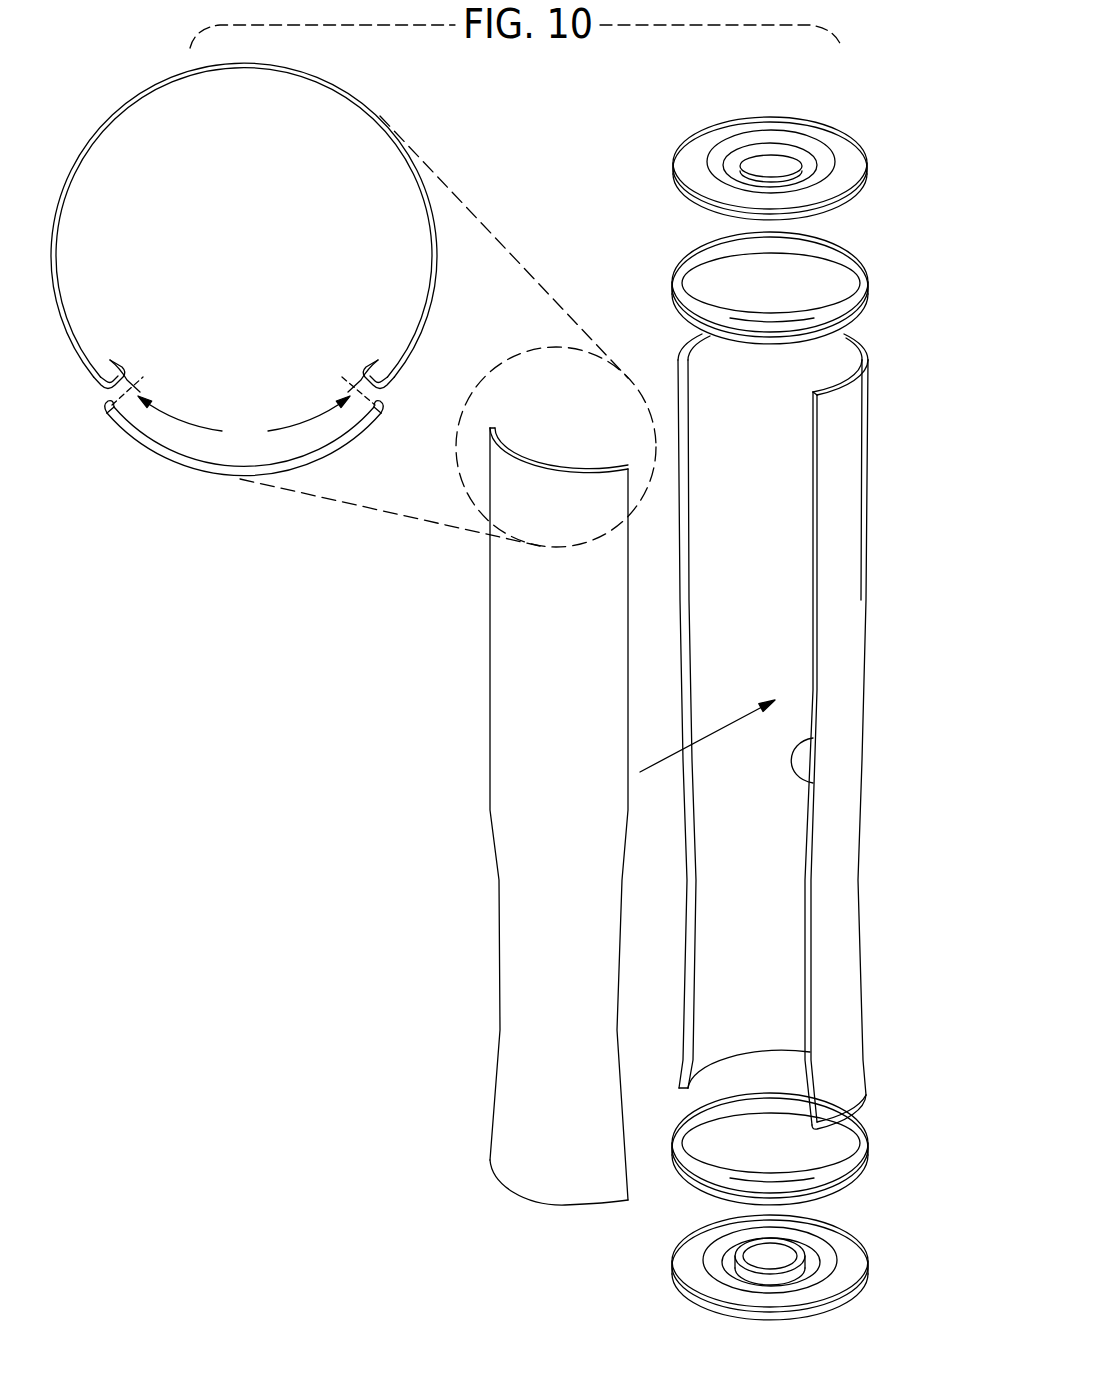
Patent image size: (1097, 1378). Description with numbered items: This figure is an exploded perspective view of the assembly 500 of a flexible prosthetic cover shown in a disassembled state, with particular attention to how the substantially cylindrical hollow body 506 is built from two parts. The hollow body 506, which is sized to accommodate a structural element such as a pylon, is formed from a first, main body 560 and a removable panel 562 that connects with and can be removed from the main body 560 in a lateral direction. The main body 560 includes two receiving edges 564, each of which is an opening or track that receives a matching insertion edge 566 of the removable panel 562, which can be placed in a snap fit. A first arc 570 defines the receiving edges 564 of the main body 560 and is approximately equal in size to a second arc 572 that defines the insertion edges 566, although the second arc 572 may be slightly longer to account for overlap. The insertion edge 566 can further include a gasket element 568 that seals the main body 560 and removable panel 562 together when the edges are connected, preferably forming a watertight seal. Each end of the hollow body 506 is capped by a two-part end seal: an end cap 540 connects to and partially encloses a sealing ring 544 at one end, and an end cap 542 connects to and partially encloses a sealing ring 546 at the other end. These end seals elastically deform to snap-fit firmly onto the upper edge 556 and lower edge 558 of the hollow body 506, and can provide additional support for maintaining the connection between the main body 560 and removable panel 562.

The assembly 500 is at (822, 112).
The hollow body 506 is at (166, 77).
The end cap 540 is at (725, 132).
The end cap 542 is at (853, 1290).
The sealing ring 544 is at (692, 257).
The sealing ring 546 is at (700, 1188).
The upper edge 556 is at (843, 392).
The lower edge 558 is at (862, 1108).
The main body 560 is at (342, 90).
The removable panel 562 is at (213, 477).
The receiving edge 564 is at (112, 362).
The insertion edge 566 is at (107, 410).
The gasket element 568 is at (107, 417).
The first arc 570 is at (117, 373).
The second arc 572 is at (243, 411).